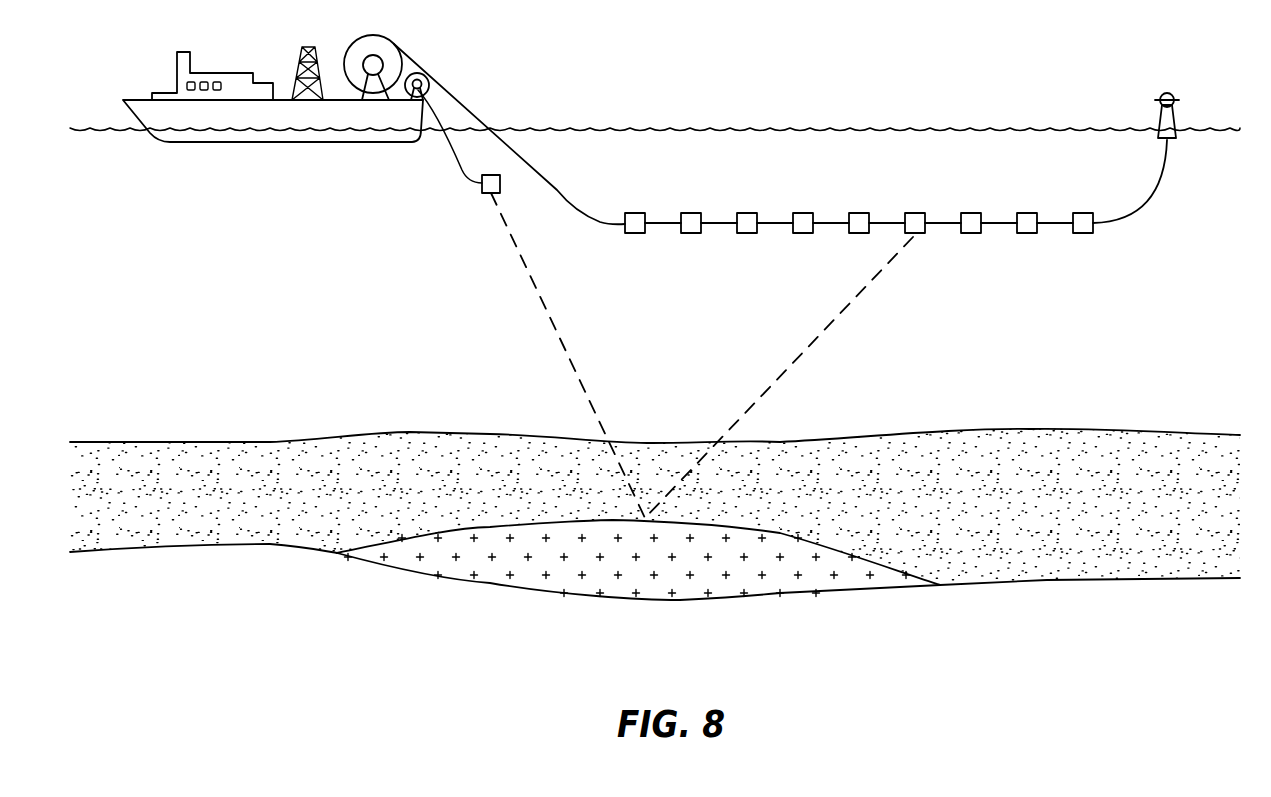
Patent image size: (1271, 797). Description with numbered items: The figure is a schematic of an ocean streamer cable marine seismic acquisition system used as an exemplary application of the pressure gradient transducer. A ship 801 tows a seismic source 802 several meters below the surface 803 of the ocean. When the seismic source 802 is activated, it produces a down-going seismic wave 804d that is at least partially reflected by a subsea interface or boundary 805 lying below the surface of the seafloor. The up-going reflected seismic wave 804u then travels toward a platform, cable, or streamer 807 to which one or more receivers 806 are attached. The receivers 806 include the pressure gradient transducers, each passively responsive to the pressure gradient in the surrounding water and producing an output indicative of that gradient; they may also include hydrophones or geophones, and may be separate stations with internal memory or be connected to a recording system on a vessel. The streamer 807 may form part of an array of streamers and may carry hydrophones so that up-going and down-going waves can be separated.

The ship 801 is at (142, 98).
The seismic source 802 is at (488, 195).
The surface 803 is at (740, 129).
The down-going seismic wave 804d is at (555, 332).
The up-going reflected seismic wave 804u is at (817, 340).
The subsea interface or boundary 805 is at (565, 523).
The receivers 806 is at (972, 233).
The streamer 807 is at (562, 196).